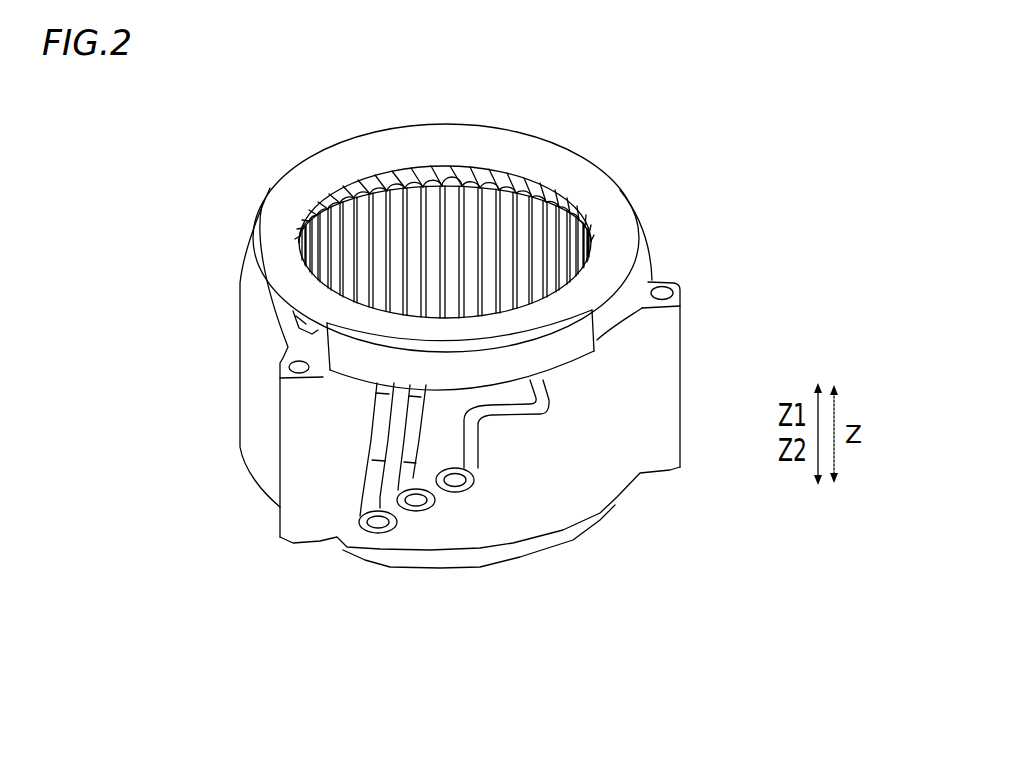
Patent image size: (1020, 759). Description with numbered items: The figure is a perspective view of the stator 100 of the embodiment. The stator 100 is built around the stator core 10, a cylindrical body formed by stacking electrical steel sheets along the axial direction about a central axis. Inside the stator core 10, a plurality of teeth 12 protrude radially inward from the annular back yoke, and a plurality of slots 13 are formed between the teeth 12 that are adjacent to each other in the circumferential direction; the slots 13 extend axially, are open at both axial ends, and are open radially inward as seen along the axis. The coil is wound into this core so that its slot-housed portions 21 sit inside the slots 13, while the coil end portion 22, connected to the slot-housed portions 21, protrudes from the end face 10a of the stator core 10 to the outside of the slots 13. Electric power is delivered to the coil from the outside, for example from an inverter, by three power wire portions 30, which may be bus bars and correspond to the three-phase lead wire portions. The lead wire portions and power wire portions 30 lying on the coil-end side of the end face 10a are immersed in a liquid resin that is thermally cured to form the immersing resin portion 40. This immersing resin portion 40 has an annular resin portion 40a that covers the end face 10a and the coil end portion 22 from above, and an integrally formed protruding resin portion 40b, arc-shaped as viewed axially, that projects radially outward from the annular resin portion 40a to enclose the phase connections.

The stator 100 is at (127, 146).
The stator core 10 is at (653, 251).
The end face 10a is at (252, 292).
The teeth 12 is at (510, 183).
The slots 13 is at (492, 170).
The slot-housed portions 21 is at (417, 172).
The coil end portion 22 is at (350, 187).
The power wire portions 30 is at (357, 511).
The immersing resin portion 40 is at (567, 327).
The annular resin portion 40a is at (607, 286).
The protruding resin portion 40b is at (572, 345).